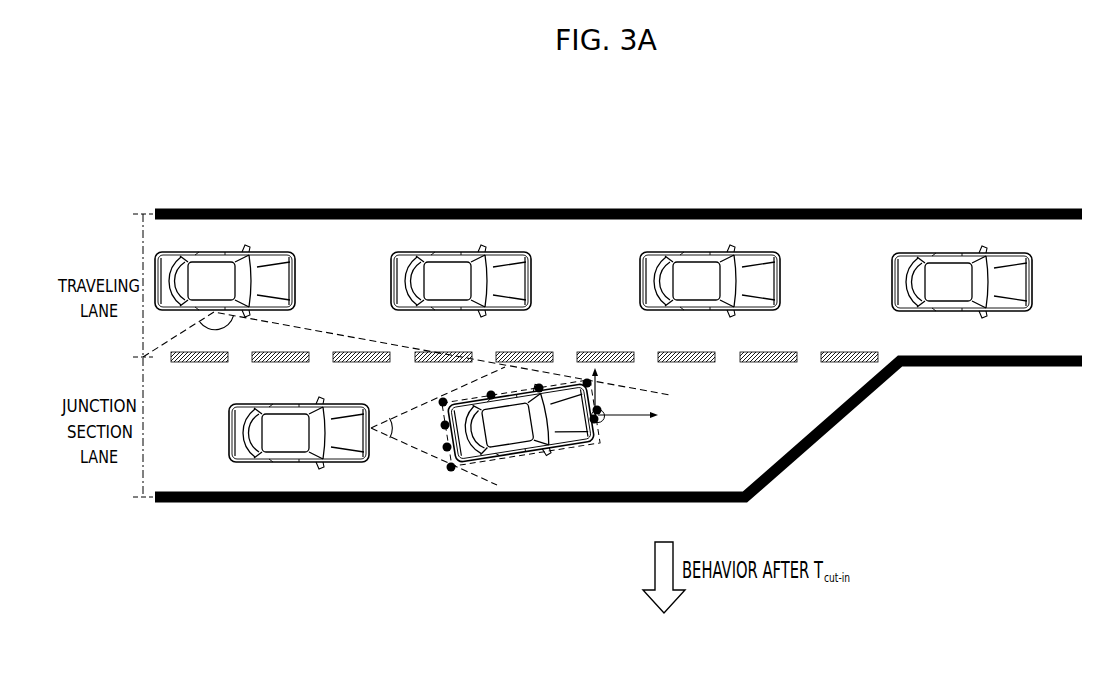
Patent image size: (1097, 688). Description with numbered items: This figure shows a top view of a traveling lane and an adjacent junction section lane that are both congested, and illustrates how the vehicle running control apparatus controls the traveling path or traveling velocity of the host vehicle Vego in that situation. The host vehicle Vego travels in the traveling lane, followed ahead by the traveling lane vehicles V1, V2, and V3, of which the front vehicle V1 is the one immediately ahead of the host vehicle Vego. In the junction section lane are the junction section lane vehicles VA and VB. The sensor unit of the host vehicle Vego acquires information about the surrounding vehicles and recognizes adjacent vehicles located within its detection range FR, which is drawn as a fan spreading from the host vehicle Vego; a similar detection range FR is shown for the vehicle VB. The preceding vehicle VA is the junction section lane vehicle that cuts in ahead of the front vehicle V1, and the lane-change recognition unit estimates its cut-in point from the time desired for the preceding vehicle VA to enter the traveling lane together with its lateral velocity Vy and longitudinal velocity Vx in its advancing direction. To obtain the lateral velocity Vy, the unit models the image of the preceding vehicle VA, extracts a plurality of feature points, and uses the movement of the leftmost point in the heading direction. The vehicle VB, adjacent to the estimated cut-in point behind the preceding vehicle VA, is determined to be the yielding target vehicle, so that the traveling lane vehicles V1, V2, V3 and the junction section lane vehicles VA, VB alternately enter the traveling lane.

The host vehicle Vego is at (225, 281).
The front vehicle V1 is at (461, 281).
The traveling lane vehicle V2 is at (710, 281).
The traveling lane vehicle V3 is at (962, 282).
The preceding vehicle VA is at (522, 424).
The yielding target vehicle VB is at (299, 433).
The detection range FR is at (406, 398).
The longitudinal velocity Vx is at (628, 427).
The lateral velocity Vy is at (605, 391).